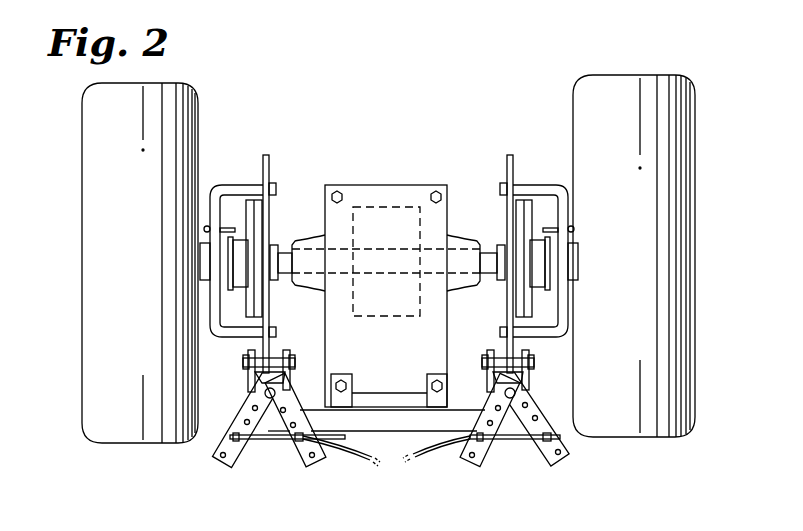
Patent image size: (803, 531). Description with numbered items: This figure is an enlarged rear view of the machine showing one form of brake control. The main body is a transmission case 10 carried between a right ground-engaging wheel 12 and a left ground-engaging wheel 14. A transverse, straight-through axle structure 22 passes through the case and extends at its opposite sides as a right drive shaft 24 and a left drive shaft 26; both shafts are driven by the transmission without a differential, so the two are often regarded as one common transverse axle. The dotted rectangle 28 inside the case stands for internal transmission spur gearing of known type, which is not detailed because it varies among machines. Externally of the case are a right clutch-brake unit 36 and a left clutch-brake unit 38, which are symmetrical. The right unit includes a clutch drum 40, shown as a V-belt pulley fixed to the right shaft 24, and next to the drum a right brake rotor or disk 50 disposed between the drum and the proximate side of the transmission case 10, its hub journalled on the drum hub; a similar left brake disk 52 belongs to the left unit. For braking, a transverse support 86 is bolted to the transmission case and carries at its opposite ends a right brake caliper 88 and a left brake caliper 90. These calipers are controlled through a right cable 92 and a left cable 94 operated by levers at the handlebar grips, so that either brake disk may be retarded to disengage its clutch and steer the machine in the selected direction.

The transmission case 10 is at (355, 185).
The right ground-engaging wheel 12 is at (696, 297).
The left ground-engaging wheel 14 is at (82, 299).
The axle structure 22 is at (391, 236).
The right drive shaft 24 is at (493, 250).
The left drive shaft 26 is at (284, 248).
The internal transmission spur gearing 28 is at (383, 318).
The right clutch-brake unit 36 is at (542, 158).
The left clutch-brake unit 38 is at (222, 160).
The clutch drum 40 is at (528, 320).
The right brake rotor or disk 50 is at (511, 160).
The left brake disk 52 is at (264, 156).
The transverse support 86 is at (386, 432).
The right brake caliper 88 is at (526, 456).
The left brake caliper 90 is at (240, 407).
The right cable 92 is at (437, 455).
The left cable 94 is at (336, 455).